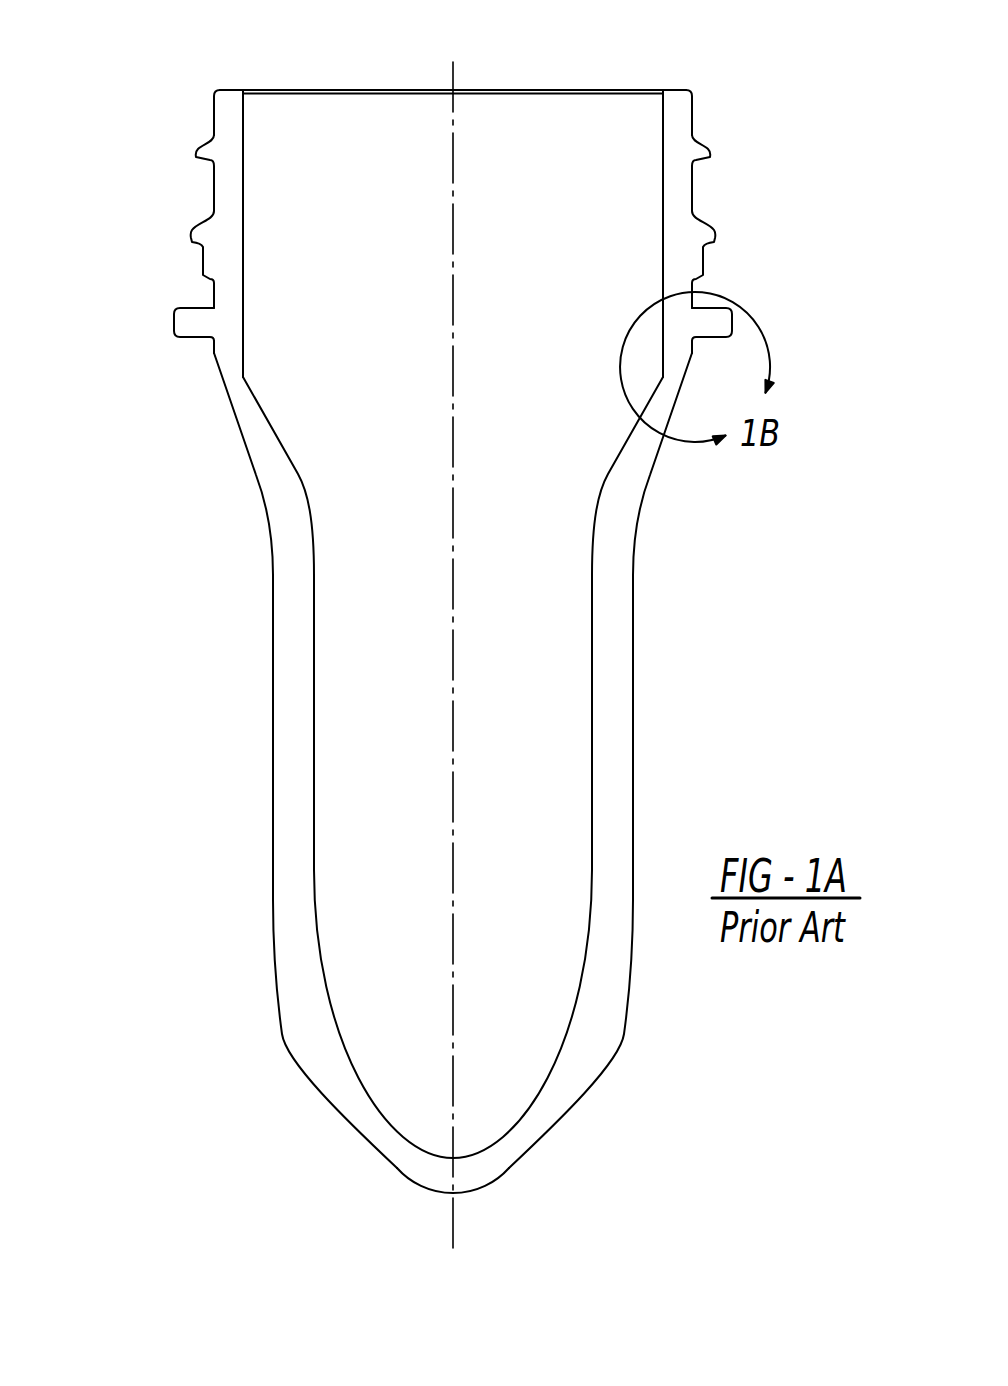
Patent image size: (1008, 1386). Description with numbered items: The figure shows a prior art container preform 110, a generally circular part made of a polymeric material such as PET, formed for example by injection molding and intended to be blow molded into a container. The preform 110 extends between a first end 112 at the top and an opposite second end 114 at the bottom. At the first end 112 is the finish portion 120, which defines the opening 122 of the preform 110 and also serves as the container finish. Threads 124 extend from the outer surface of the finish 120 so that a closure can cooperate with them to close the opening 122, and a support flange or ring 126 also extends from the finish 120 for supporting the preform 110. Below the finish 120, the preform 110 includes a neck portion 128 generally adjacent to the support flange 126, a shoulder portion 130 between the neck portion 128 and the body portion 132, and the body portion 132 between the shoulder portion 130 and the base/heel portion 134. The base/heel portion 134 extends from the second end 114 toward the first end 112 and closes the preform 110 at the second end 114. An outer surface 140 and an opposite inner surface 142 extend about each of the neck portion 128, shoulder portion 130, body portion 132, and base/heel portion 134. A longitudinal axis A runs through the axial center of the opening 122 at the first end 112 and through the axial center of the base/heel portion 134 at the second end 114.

The preform 110 is at (160, 38).
The first end 112 is at (231, 88).
The second end 114 is at (470, 1192).
The finish portion 120 is at (220, 108).
The opening 122 is at (662, 136).
The threads 124 is at (710, 157).
The support flange or ring 126 is at (733, 323).
The neck portion 128 is at (213, 349).
The shoulder portion 130 is at (265, 455).
The body portion 132 is at (293, 813).
The base/heel portion 134 is at (355, 1113).
The outer surface 140 is at (635, 647).
The inner surface 142 is at (592, 750).
The longitudinal axis A is at (455, 75).